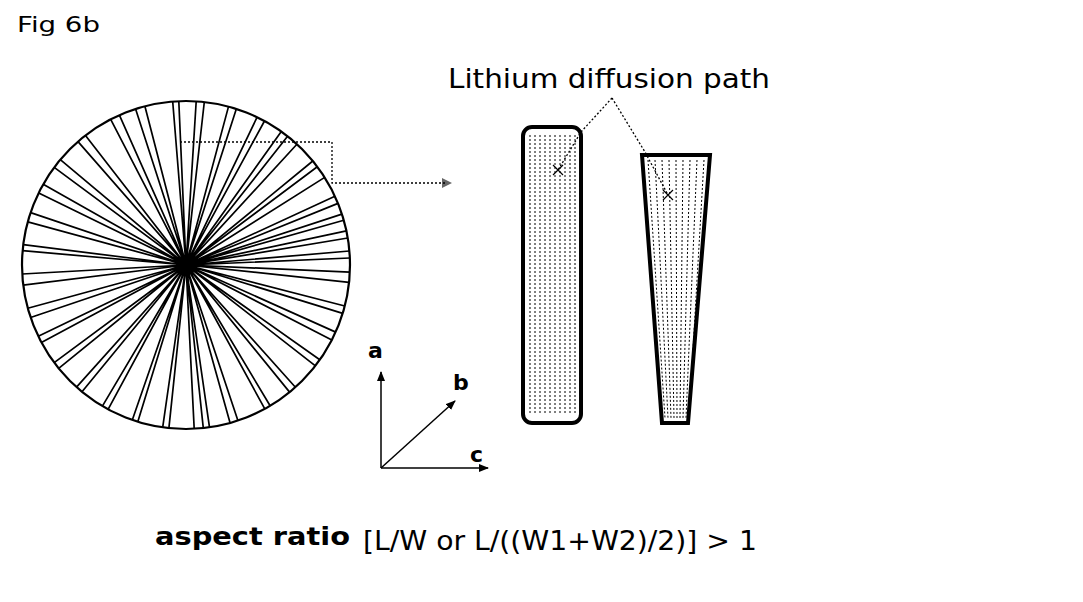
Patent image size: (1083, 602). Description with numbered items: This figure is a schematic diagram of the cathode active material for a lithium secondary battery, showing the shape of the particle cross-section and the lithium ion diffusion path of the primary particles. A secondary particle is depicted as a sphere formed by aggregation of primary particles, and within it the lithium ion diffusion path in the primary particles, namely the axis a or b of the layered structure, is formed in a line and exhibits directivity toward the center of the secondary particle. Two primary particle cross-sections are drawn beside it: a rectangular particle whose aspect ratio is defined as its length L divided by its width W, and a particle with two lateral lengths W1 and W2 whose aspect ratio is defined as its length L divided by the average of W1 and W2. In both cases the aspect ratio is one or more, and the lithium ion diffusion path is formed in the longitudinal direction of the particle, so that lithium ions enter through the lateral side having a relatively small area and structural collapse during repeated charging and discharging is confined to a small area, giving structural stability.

The length L is at (494, 150).
The width W is at (572, 443).
The first lateral length W1 is at (691, 443).
The second lateral length W2 is at (701, 139).